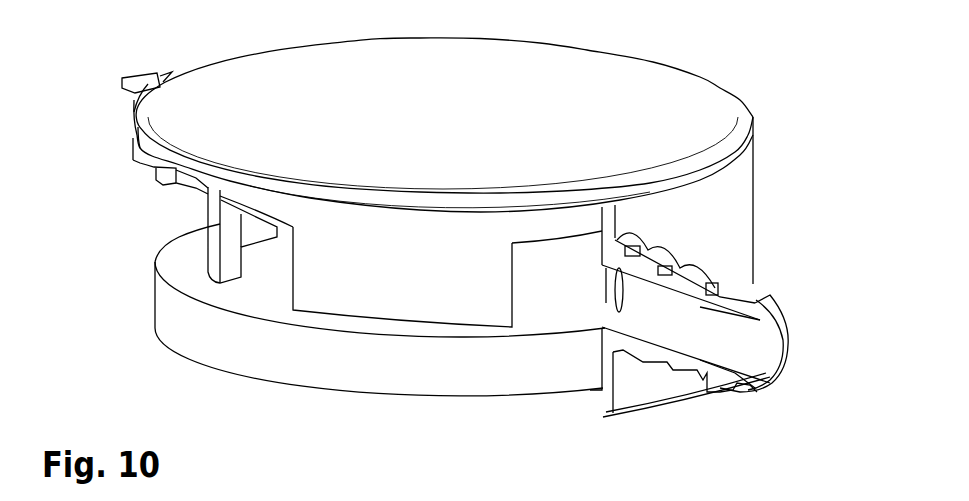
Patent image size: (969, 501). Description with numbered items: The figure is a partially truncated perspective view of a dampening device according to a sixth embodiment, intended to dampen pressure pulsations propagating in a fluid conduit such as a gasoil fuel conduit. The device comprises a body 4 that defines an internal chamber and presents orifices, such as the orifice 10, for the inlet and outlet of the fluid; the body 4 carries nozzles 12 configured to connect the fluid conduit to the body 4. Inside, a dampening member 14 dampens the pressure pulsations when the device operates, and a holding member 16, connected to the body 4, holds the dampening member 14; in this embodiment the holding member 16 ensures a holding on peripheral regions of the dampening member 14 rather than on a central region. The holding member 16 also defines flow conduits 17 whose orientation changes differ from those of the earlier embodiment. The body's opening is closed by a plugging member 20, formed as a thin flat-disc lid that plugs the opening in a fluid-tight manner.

The body 4 is at (640, 378).
The orifice 10 is at (596, 302).
The nozzle 12 is at (138, 84).
The dampening member 14 is at (180, 325).
The holding member 16 is at (352, 262).
The flow conduit 17 is at (277, 267).
The plugging member 20 is at (298, 128).